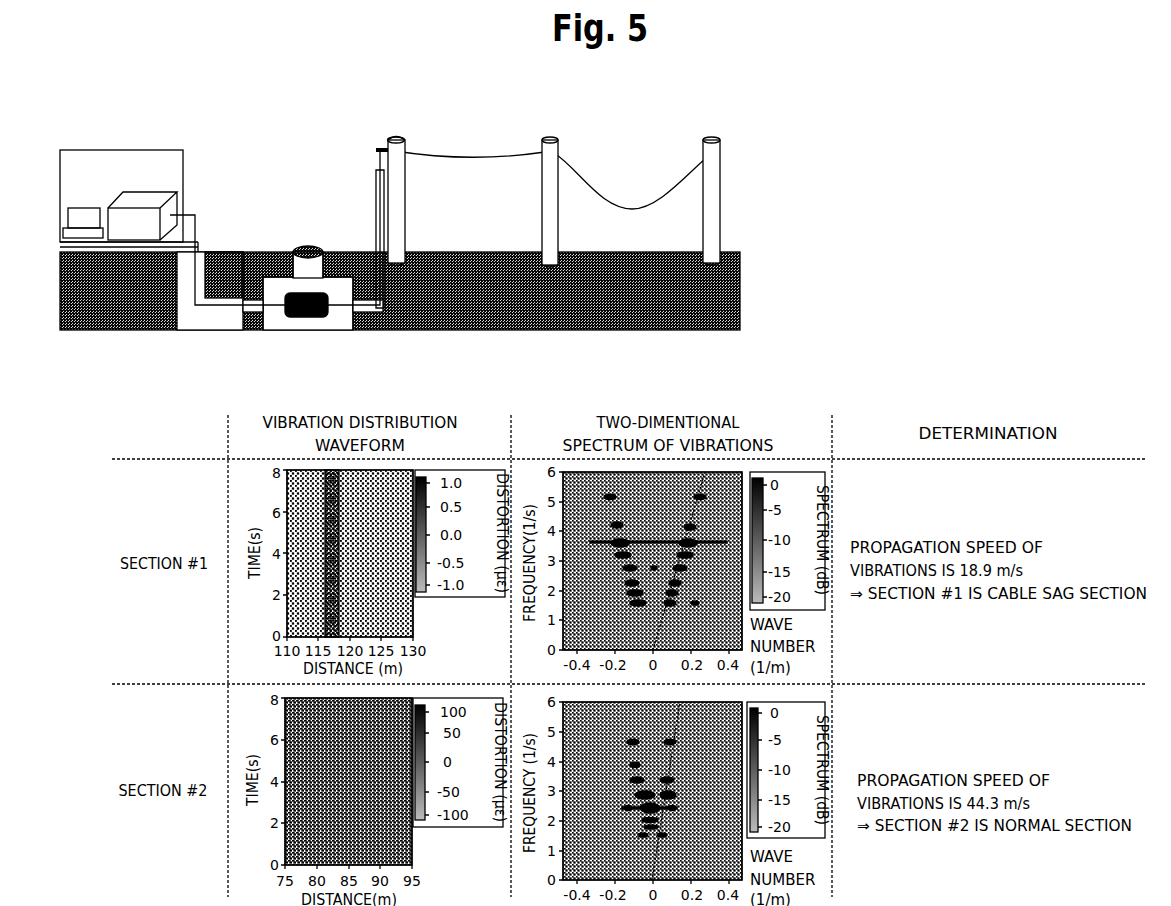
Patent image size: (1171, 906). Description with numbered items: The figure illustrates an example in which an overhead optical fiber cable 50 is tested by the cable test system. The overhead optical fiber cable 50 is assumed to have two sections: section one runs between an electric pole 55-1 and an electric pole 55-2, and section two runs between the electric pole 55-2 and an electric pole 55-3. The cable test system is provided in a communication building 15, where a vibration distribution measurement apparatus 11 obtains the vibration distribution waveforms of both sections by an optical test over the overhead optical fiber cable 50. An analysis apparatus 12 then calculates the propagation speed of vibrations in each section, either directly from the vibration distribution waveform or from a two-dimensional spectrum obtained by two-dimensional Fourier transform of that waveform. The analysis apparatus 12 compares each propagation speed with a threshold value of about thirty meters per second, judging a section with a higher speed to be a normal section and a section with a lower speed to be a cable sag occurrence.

The vibration distribution measurement apparatus 11 is at (149, 192).
The analysis apparatus 12 is at (86, 208).
The communication building 15 is at (132, 150).
The overhead optical fiber cable 50 is at (200, 222).
The electric pole 55-1 is at (705, 136).
The electric pole 55-2 is at (547, 136).
The electric pole 55-3 is at (394, 136).